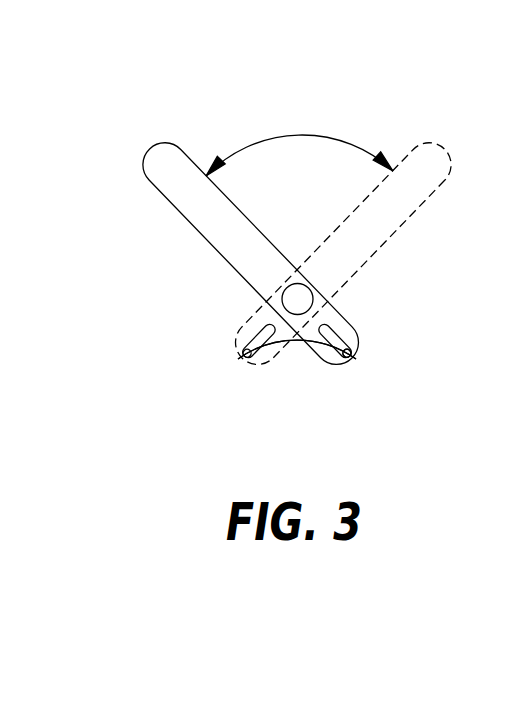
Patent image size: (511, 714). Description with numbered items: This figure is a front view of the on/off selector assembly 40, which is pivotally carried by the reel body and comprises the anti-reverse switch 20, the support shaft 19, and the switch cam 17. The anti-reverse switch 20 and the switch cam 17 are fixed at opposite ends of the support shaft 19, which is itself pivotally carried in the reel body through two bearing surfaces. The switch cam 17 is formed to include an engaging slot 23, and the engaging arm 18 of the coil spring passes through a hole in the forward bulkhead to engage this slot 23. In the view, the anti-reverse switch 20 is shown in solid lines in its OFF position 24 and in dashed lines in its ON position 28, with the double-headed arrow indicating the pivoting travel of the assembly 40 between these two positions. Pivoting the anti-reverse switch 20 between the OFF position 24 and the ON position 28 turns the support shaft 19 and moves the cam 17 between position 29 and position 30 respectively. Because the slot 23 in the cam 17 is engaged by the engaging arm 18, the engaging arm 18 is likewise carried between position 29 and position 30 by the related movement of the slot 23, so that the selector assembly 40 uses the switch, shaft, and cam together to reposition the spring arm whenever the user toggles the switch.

The switch cam 17 is at (330, 356).
The engaging arm 18 is at (348, 350).
The support shaft 19 is at (296, 293).
The anti-reverse switch 20 is at (240, 219).
The engaging slot 23 is at (339, 330).
The OFF position 24 is at (241, 254).
The ON position 28 is at (353, 254).
The position 29 is at (347, 353).
The position 30 is at (247, 353).
The on/off selector assembly 40 is at (222, 128).